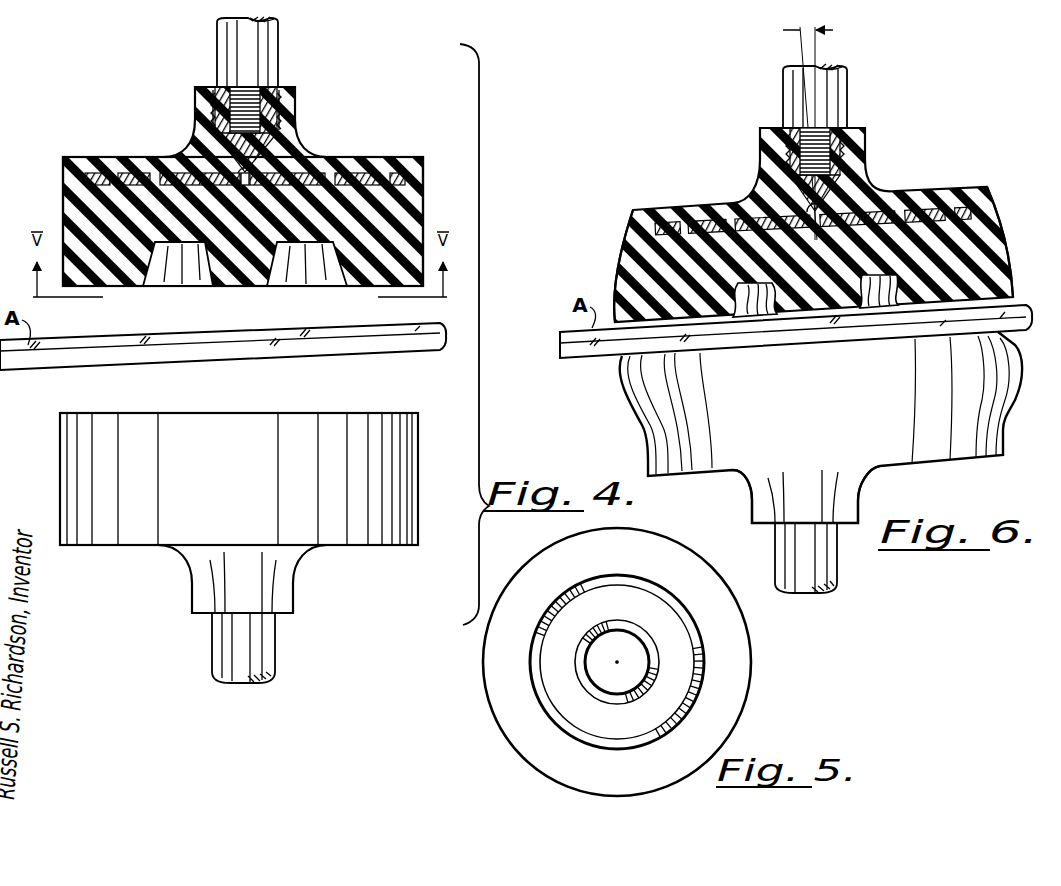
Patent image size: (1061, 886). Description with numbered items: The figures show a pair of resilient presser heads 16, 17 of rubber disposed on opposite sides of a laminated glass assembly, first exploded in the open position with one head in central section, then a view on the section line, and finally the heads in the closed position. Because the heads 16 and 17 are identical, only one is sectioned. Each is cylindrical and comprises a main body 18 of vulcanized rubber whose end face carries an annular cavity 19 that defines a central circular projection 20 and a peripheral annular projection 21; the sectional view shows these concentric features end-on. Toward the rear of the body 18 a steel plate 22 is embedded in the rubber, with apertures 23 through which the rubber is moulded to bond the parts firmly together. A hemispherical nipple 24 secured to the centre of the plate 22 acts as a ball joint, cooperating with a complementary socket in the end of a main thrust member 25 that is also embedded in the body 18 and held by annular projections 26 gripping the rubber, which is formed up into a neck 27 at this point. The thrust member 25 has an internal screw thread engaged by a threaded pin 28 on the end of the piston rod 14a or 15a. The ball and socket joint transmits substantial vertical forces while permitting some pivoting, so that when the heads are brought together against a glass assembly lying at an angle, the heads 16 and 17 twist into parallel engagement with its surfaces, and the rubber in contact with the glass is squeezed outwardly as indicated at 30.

In FIG. 4, the piston rod 14a is at (272, 50).
In FIG. 6, the piston rod 14a is at (842, 92).
In FIG. 4, the piston rod 15a is at (263, 648).
In FIG. 6, the piston rod 15a is at (781, 557).
In FIG. 4, the presser head 16 is at (84, 135).
In FIG. 6, the presser head 16 is at (968, 162).
In FIG. 4, the presser head 17 is at (58, 465).
In FIG. 6, the presser head 17 is at (1012, 437).
In FIG. 4, the main body 18 is at (63, 216).
In FIG. 4, the annular cavity 19 is at (185, 272).
In FIG. 6, the annular cavity 19 is at (755, 300).
In FIG. 5, the annular cavity 19 is at (566, 690).
In FIG. 4, the central circular projection 20 is at (255, 280).
In FIG. 6, the central circular projection 20 is at (835, 330).
In FIG. 5, the central circular projection 20 is at (631, 662).
In FIG. 4, the peripheral annular projection 21 is at (116, 288).
In FIG. 5, the peripheral annular projection 21 is at (730, 693).
In FIG. 4, the steel plate 22 is at (333, 170).
In FIG. 6, the steel plate 22 is at (893, 205).
In FIG. 4, the apertures 23 is at (378, 158).
In FIG. 4, the hemispherical nipple 24 is at (262, 171).
In FIG. 6, the hemispherical nipple 24 is at (780, 203).
In FIG. 4, the main thrust member 25 is at (280, 100).
In FIG. 6, the main thrust member 25 is at (768, 180).
In FIG. 4, the annular projections 26 is at (290, 112).
In FIG. 4, the neck 27 is at (204, 88).
In FIG. 6, the neck 27 is at (752, 498).
In FIG. 4, the threaded pin 28 is at (236, 96).
In FIG. 6, the threaded pin 28 is at (810, 135).
In FIG. 6, the squeezed rubber 30 is at (610, 305).